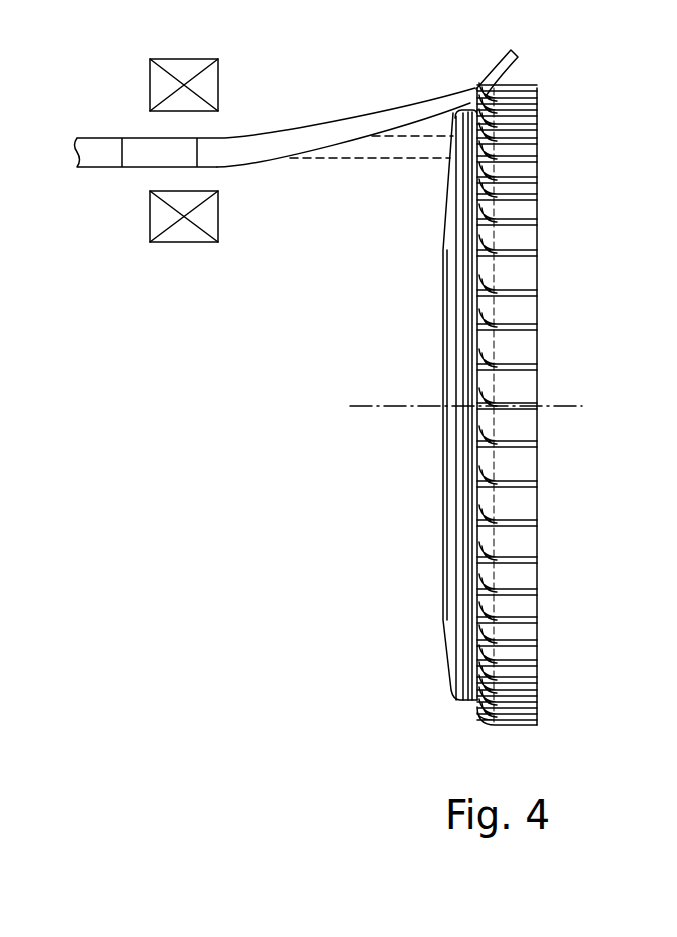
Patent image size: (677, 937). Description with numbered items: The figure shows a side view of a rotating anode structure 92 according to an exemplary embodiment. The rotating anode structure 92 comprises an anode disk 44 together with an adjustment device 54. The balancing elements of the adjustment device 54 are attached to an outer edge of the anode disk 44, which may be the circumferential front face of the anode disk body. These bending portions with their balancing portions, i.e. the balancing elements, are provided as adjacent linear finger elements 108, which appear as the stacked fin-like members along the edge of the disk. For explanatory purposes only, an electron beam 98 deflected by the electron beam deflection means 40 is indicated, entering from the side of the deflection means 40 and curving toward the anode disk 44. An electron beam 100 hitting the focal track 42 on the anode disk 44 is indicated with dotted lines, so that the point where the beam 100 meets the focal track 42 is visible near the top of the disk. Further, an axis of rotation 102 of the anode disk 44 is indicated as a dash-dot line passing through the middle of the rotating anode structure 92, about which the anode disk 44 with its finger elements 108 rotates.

The electron beam deflection means 40 is at (148, 87).
The focal track 42 is at (452, 146).
The anode disk 44 is at (425, 203).
The adjustment device 54 is at (547, 106).
The rotating anode structure 92 is at (400, 265).
The electron beam 98 is at (258, 134).
The electron beam 100 is at (327, 160).
The axis of rotation 102 is at (553, 405).
The finger elements 108 is at (547, 465).